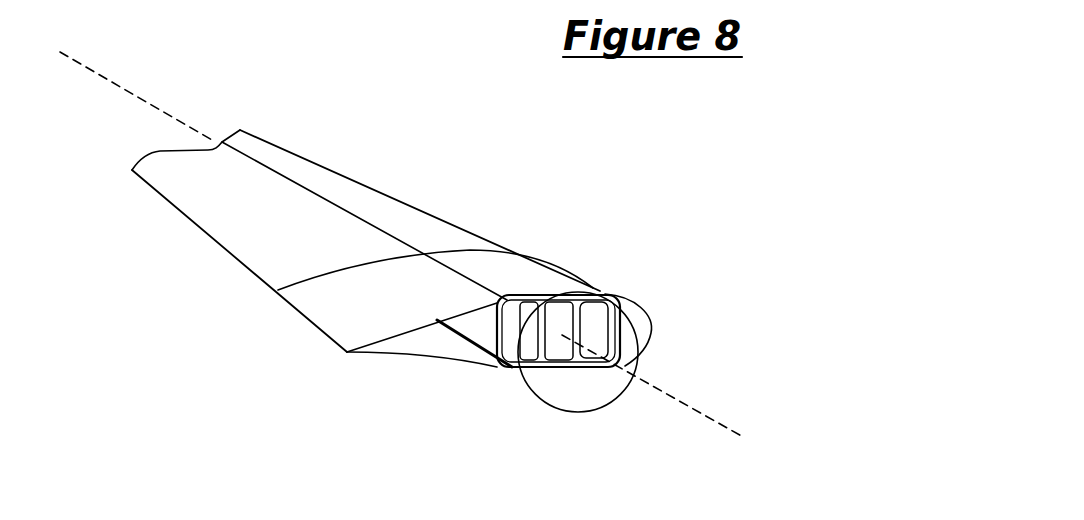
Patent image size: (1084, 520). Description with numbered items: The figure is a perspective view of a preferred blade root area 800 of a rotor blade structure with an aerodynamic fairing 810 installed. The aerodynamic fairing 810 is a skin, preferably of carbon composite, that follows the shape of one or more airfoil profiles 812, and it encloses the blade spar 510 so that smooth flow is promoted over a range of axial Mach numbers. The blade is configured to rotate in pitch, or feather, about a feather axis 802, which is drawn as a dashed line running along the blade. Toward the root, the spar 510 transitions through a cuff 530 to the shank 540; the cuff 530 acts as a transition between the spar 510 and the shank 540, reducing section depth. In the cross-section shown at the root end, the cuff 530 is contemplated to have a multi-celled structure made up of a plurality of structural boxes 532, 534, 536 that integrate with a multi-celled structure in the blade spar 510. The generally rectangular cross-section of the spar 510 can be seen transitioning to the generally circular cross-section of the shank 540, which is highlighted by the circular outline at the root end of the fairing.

The blade root area 800 is at (438, 263).
The feather axis 802 is at (122, 90).
The aerodynamic fairing 810 is at (220, 245).
The airfoil profile 812 is at (467, 250).
The spar 510 is at (470, 342).
The cuff 530 is at (517, 370).
The structural box 532 is at (524, 364).
The structural box 534 is at (557, 362).
The structural box 536 is at (590, 358).
The shank 540 is at (640, 360).